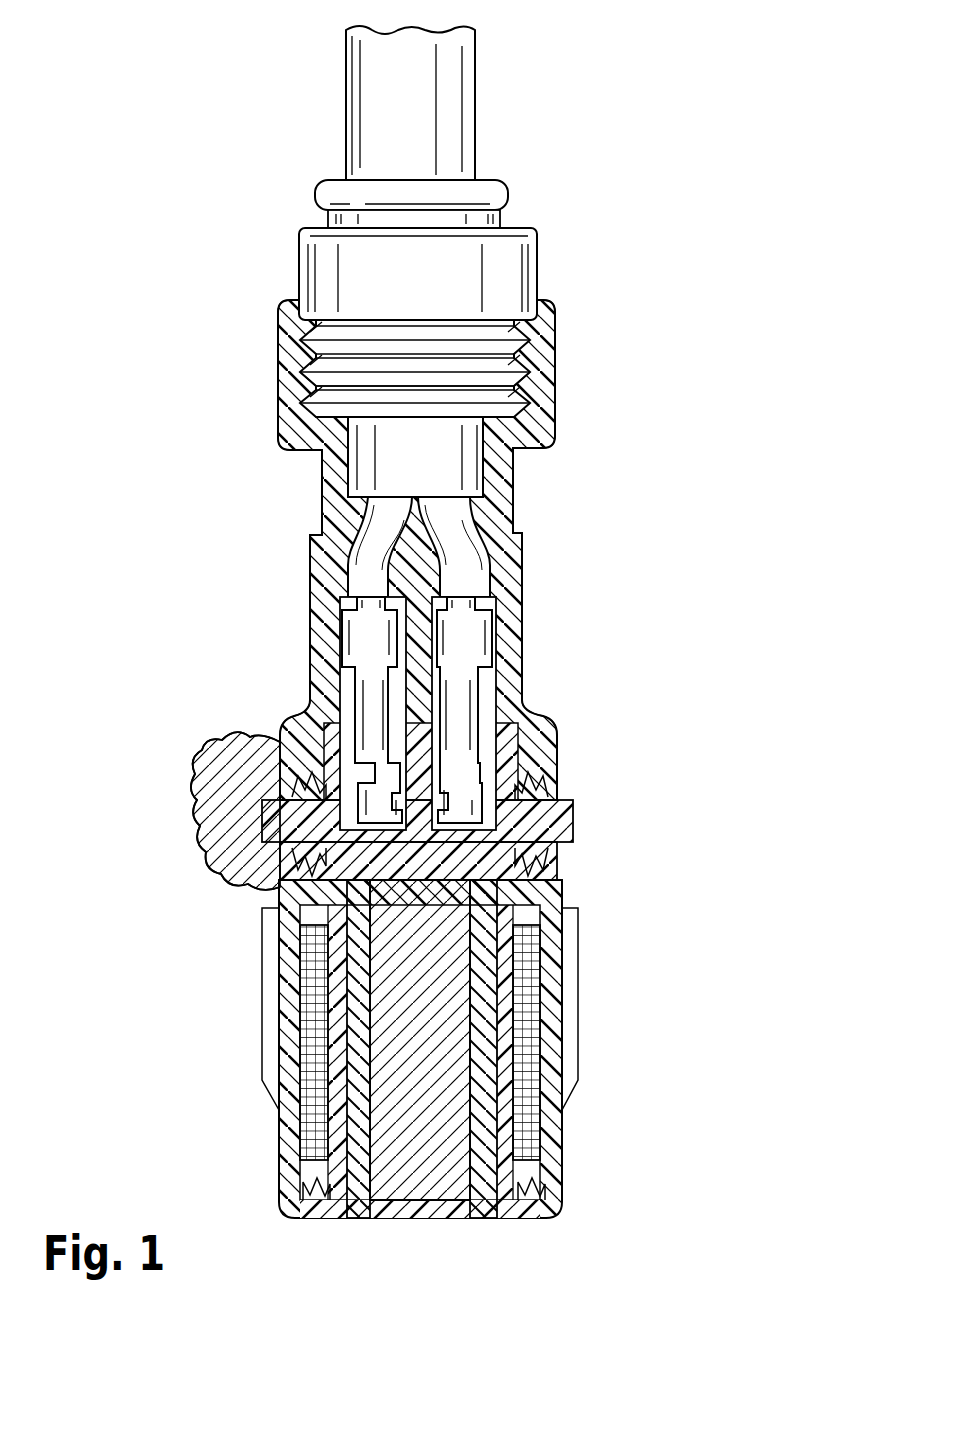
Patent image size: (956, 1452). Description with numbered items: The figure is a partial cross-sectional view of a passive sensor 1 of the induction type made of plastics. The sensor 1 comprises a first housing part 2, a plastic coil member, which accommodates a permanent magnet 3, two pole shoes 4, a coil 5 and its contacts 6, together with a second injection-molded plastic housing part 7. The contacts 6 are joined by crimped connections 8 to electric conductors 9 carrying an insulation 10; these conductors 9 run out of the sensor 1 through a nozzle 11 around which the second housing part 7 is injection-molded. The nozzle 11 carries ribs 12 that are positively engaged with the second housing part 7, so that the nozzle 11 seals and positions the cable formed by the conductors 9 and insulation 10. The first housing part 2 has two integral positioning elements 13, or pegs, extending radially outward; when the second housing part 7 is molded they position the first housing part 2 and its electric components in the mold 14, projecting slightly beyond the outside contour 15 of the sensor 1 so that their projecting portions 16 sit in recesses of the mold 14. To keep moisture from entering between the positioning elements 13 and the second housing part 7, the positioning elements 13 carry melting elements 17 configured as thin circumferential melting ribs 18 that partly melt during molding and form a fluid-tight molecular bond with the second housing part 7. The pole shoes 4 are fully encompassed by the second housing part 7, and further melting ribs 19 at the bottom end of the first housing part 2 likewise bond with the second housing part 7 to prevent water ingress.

The passive sensor 1 is at (550, 472).
The first housing part 2 is at (462, 876).
The permanent magnet 3 is at (428, 1178).
The pole shoes 4 is at (487, 1025).
The coil 5 is at (545, 1066).
The contacts 6 is at (462, 750).
The second housing part 7 is at (345, 537).
The crimped connections 8 is at (370, 633).
The electric conductors 9 is at (470, 600).
The insulation 10 is at (445, 548).
The nozzle 11 is at (488, 372).
The ribs 12 is at (503, 397).
The positioning elements 13 is at (535, 820).
The mold 14 is at (228, 818).
The outside contour 15 is at (280, 790).
The projecting portions 16 is at (285, 845).
The melting elements 17 is at (540, 850).
The melting ribs 18 is at (538, 792).
The further melting ribs 19 is at (545, 1192).